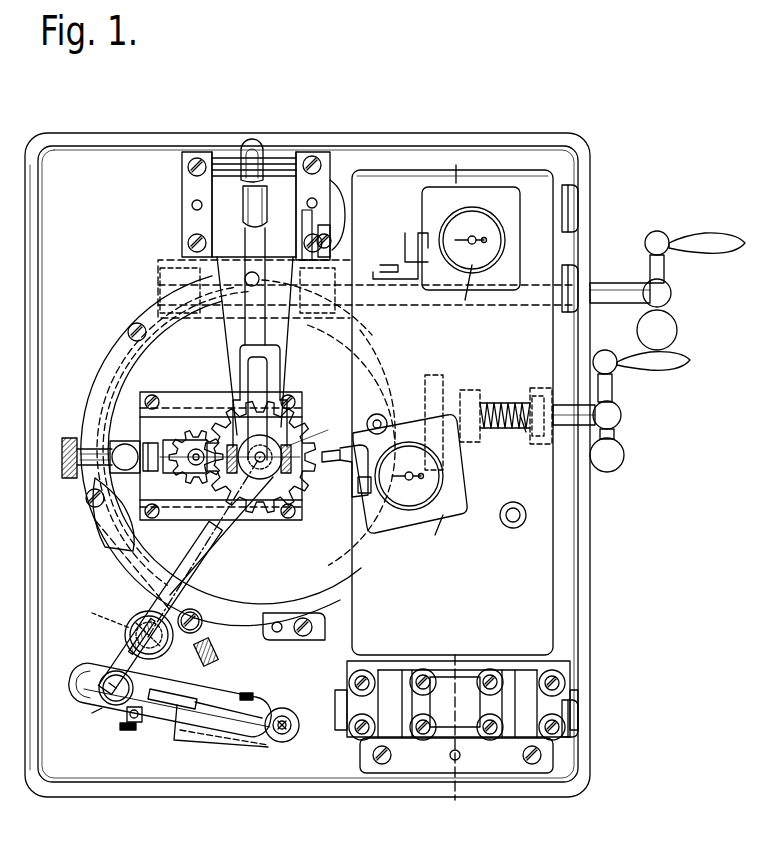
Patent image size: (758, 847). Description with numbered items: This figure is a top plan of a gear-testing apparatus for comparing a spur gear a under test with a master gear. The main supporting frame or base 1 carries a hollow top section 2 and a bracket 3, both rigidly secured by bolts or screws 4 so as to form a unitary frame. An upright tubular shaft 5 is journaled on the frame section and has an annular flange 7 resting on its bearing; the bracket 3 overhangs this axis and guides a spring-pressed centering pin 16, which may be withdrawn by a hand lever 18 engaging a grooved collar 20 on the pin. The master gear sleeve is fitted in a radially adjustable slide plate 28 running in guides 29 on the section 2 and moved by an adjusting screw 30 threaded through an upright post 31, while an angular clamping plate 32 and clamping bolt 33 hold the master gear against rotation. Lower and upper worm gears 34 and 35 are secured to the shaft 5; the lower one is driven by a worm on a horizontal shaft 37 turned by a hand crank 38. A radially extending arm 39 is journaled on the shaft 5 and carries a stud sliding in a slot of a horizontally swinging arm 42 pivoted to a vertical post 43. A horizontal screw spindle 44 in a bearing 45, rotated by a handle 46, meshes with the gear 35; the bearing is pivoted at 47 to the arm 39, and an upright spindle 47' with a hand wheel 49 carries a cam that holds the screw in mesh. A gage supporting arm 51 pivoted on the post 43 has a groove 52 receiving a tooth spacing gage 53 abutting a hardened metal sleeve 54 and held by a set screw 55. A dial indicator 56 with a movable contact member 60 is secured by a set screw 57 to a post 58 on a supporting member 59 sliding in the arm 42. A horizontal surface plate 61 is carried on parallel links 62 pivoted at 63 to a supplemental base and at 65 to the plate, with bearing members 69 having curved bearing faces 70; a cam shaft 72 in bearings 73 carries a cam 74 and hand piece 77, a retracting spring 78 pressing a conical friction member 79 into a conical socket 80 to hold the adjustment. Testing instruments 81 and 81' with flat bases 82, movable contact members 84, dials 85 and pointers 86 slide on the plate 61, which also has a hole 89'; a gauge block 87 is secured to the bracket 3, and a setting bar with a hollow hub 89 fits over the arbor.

The main supporting frame or base 1 is at (103, 160).
The hollow top section 2 is at (132, 372).
The bracket 3 is at (284, 172).
The bolts or screws 4 is at (189, 167).
The upright tubular shaft 5 is at (455, 483).
The annular enlargement or flange 7 is at (280, 437).
The centering pin 16 is at (262, 470).
The hand lever 18 is at (243, 190).
The grooved collar 20 is at (210, 450).
The slide plate 28 is at (165, 478).
The guides 29 is at (180, 417).
The adjusting screw 30 is at (68, 438).
The upright post 31 is at (115, 470).
The angular clamping plate 32 is at (152, 445).
The clamping bolt 33 is at (200, 515).
The lower worm gear 34 is at (372, 352).
The upper worm gear 35 is at (213, 580).
The horizontal shaft 37 is at (614, 288).
The hand crank 38 is at (672, 257).
The radially extending arm 39 is at (124, 638).
The horizontally swinging arm 42 is at (78, 666).
The vertical post or stud 43 is at (288, 719).
The horizontal screw spindle 44 is at (125, 548).
The bearing 45 is at (158, 586).
The handle 46 is at (210, 656).
The pivot 47 is at (212, 623).
The upright spindle 47' is at (103, 612).
The hand wheel 49 is at (145, 623).
The gage supporting arm 51 is at (203, 735).
The groove 52 is at (237, 727).
The tooth spacing gage 53 is at (252, 722).
The hardened metal sleeve 54 is at (281, 742).
The set screw 55 is at (246, 700).
The dial indicator 56 is at (100, 697).
The set screw 57 is at (132, 731).
The post 58 is at (118, 705).
The supporting member 59 is at (143, 720).
The movable contact member 60 is at (170, 696).
The horizontal surface plate 61 is at (540, 487).
The parallel links 62 is at (385, 668).
The pivots 63 is at (570, 285).
The pivots 65 is at (580, 210).
The bearing members 69 is at (505, 700).
The curved bearing faces 70 is at (405, 665).
The cam shaft 72 is at (622, 416).
The bearings 73 is at (472, 395).
The cam 74 is at (440, 378).
The hand piece 77 is at (618, 375).
The retracting spring 78 is at (500, 405).
The conical friction member 79 is at (524, 432).
The conical socket 80 is at (540, 438).
The testing instrument 81 is at (439, 537).
The testing instrument 81' is at (470, 298).
The flat bases 82 is at (510, 227).
The movable contact member 84 is at (388, 268).
The dials 85 is at (485, 222).
The pointers 86 is at (462, 240).
The gauge block 87 is at (332, 238).
The hollow hub 89 is at (515, 530).
The hole 89' is at (371, 414).
The gear under test a is at (312, 422).